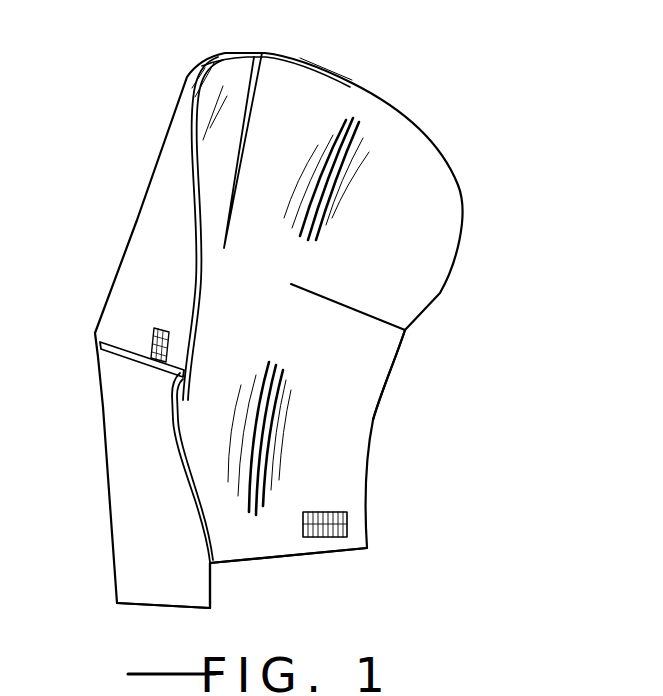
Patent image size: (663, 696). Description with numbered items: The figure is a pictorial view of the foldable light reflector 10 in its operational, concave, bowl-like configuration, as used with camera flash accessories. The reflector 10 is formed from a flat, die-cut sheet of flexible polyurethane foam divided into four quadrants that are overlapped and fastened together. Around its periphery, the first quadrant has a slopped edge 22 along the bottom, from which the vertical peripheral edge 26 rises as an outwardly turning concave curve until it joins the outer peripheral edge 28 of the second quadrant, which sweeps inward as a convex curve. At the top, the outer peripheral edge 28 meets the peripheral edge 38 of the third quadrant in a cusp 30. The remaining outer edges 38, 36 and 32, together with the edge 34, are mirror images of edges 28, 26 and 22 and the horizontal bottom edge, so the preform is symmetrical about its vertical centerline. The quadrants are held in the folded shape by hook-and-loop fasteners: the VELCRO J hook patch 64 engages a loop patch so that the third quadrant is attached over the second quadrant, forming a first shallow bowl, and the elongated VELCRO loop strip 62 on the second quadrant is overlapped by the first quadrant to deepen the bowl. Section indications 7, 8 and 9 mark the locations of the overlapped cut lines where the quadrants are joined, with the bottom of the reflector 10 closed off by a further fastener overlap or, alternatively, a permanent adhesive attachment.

The reflector 10 is at (509, 161).
The slopped edge 22 is at (130, 605).
The vertical peripheral edge 26 is at (175, 443).
The outer peripheral edge 28 is at (195, 280).
The cusp 30 is at (262, 58).
The slopped edge 32 is at (323, 548).
The peripheral edge 34 is at (213, 563).
The peripheral edge 36 is at (370, 443).
The peripheral edge 38 is at (370, 87).
The VELCRO loop strip 62 is at (177, 332).
The VELCRO J hook patch 64 is at (327, 511).
The section line 7- 7 is at (275, 179).
The section line 8- 8 is at (143, 390).
The section line 9- 9 is at (362, 347).